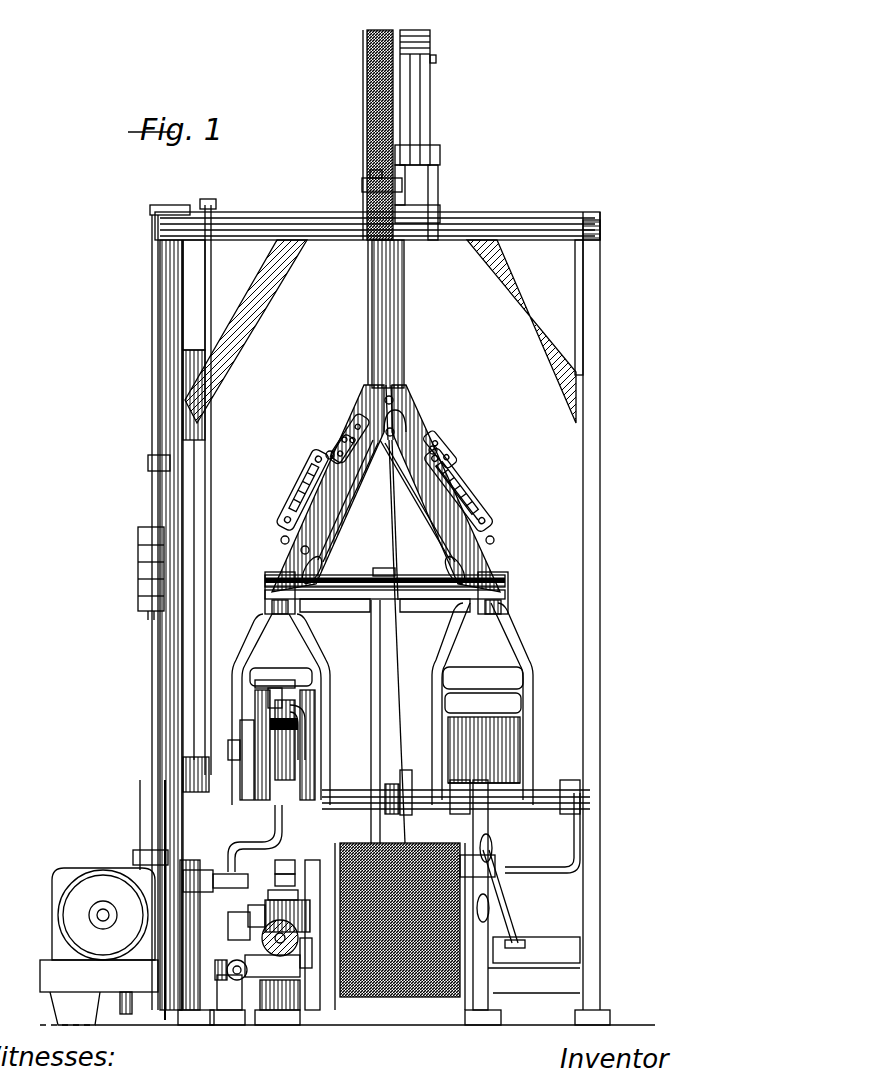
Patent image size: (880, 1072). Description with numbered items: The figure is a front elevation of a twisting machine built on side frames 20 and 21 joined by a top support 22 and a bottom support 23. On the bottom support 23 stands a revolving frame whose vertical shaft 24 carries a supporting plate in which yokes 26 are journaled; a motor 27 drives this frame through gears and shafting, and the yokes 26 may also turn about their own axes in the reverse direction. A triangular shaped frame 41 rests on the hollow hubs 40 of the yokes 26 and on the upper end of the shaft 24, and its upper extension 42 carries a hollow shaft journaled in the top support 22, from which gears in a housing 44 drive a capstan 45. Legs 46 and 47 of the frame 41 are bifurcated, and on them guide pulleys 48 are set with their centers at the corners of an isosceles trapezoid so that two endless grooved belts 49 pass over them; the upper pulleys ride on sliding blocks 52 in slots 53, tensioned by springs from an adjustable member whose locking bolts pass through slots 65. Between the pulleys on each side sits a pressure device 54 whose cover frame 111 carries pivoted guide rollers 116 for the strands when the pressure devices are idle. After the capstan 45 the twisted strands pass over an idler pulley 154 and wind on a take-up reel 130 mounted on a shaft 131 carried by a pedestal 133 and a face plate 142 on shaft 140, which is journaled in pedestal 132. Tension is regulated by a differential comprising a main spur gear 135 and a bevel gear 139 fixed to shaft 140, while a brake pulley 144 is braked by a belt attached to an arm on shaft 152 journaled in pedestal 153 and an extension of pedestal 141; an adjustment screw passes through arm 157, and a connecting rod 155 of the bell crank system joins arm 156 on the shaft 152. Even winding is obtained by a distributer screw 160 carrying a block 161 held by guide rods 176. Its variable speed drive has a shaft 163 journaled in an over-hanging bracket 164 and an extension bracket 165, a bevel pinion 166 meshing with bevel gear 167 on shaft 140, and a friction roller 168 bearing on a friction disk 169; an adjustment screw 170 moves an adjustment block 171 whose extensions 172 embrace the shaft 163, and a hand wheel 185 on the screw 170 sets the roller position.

The side frame 20 is at (170, 655).
The side frame 21 is at (588, 664).
The top support 22 is at (486, 228).
The bottom support 23 is at (523, 940).
The vertical shaft 24 is at (378, 653).
The yoke 26 is at (318, 645).
The motor 27 is at (98, 875).
The hollow hub 40 is at (268, 598).
The triangular shaped frame 41 is at (345, 575).
The upper extension 42 is at (400, 300).
The housing 44 is at (424, 92).
The capstan 45 is at (385, 40).
The leg 46 is at (340, 512).
The leg 47 is at (430, 515).
The guide pulley 48 is at (338, 442).
The endless grooved belt 49 is at (391, 540).
The sliding block 52 is at (333, 441).
The slot 53 is at (353, 416).
The pressure device 54 is at (302, 486).
The slot 65 is at (395, 420).
The cover frame 111 is at (478, 512).
The guide roller 116 is at (448, 457).
The take-up reel 130 is at (312, 1012).
The shaft 131 is at (490, 930).
The pedestal 132 is at (292, 1012).
The pedestal 133 is at (482, 1012).
The main spur gear 135 is at (270, 940).
The bevel gear 139 is at (285, 893).
The shaft 140 is at (290, 915).
The pedestal 141 is at (230, 1012).
The face plate 142 is at (300, 975).
The brake pulley 144 is at (252, 925).
The shaft 152 is at (245, 915).
The pedestal 153 is at (192, 1012).
The idler pulley 154 is at (365, 185).
The connecting rod 155 is at (240, 502).
The arm 156 is at (182, 870).
The arm 157 is at (213, 885).
The distributer screw 160 is at (350, 795).
The distributer block 161 is at (405, 772).
The shaft 163 is at (290, 765).
The over-hanging bracket portion 164 is at (312, 700).
The extension bracket 165 is at (290, 866).
The bevel pinion 166 is at (290, 879).
The bevel gear 167 is at (300, 945).
The friction roller 168 is at (296, 740).
The friction disk 169 is at (293, 728).
The adjustment screw 170 is at (248, 845).
The adjustment block 171 is at (262, 748).
The extension 172 is at (305, 712).
The guide rod 176 is at (352, 843).
The hand wheel 185 is at (270, 682).